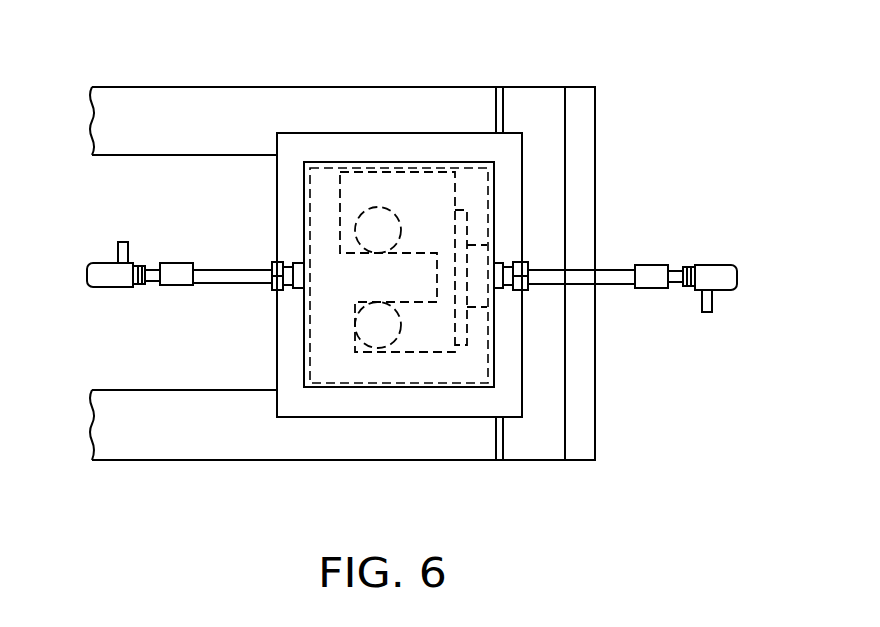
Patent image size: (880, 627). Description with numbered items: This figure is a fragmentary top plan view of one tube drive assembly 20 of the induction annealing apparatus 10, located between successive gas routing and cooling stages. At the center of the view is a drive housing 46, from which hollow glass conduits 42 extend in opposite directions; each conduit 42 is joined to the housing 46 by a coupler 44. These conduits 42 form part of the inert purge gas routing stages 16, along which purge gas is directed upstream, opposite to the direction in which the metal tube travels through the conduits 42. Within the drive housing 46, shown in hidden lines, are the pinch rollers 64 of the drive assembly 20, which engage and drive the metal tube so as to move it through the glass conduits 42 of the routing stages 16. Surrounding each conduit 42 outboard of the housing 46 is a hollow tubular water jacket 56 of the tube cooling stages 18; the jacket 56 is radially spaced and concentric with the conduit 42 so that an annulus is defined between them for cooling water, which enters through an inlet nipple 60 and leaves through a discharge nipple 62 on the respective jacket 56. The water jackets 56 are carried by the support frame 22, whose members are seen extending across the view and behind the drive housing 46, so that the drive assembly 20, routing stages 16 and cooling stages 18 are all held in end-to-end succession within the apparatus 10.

The induction annealing apparatus 10 is at (585, 68).
The inert purge gas routing stage 16 is at (233, 260).
The tube cooling stage 18 is at (706, 258).
The tube drive assembly 20 is at (266, 360).
The support frame 22 is at (168, 462).
The glass conduit 42 is at (217, 286).
The coupler 44 is at (177, 289).
The drive housing 46 is at (448, 420).
The water jacket 56 is at (102, 291).
The inlet nipple 60 is at (121, 241).
The discharge nipple 62 is at (714, 303).
The pinch roller 64 is at (363, 303).